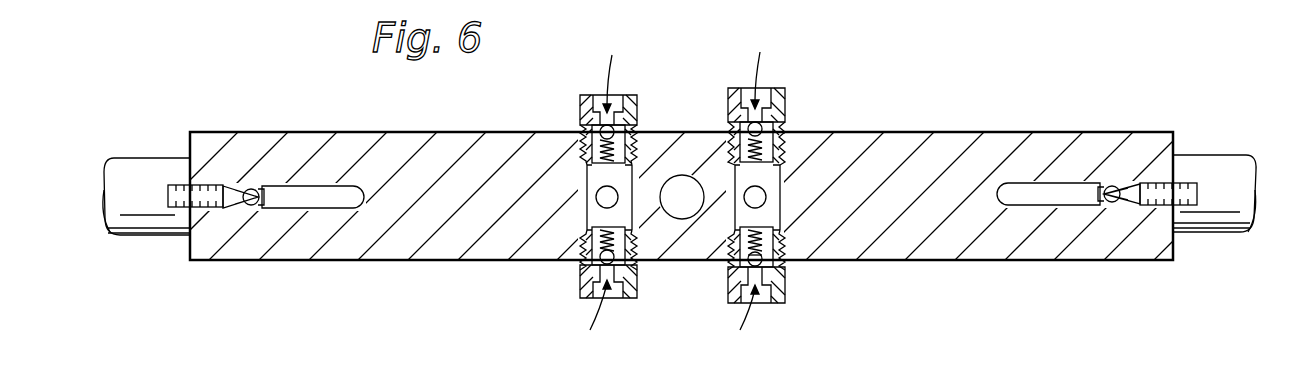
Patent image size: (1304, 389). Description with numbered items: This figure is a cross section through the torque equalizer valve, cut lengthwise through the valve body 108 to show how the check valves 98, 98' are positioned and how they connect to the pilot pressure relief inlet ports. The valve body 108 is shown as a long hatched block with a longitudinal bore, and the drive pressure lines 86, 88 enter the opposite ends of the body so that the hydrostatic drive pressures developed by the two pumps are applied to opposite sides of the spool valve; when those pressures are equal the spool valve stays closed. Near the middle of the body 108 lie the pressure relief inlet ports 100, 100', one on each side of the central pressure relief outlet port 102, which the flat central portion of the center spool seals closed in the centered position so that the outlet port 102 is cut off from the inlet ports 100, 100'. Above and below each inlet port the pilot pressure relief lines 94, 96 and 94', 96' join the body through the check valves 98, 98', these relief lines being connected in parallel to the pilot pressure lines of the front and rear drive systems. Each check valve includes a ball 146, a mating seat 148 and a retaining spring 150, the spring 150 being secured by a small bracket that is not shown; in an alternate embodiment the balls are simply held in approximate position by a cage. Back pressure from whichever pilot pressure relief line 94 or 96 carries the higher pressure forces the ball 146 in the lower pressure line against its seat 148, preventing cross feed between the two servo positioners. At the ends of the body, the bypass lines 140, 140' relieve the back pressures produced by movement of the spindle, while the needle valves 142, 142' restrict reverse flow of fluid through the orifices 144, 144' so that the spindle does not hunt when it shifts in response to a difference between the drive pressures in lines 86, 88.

The drive pressure line 86 is at (1218, 155).
The drive pressure line 88 is at (118, 158).
The pilot pressure relief line 94 is at (777, 88).
The pilot pressure relief line 94' is at (588, 94).
The pilot pressure relief line 96 is at (732, 293).
The pilot pressure relief line 96' is at (577, 293).
The check valve 98 is at (746, 195).
The check valve 98' is at (599, 196).
The pressure relief inlet port 100 is at (795, 148).
The pressure relief inlet port 100' is at (550, 156).
The pressure relief outlet port 102 is at (681, 176).
The valve body 108 is at (868, 132).
The bypass line 140 is at (1042, 144).
The bypass line 140' is at (313, 147).
The needle valve 142 is at (1189, 229).
The needle valve 142' is at (183, 156).
The orifice 144 is at (1100, 143).
The orifice 144' is at (256, 146).
The ball 146 is at (797, 280).
The mating seat 148 is at (776, 283).
The retaining spring 150 is at (819, 259).